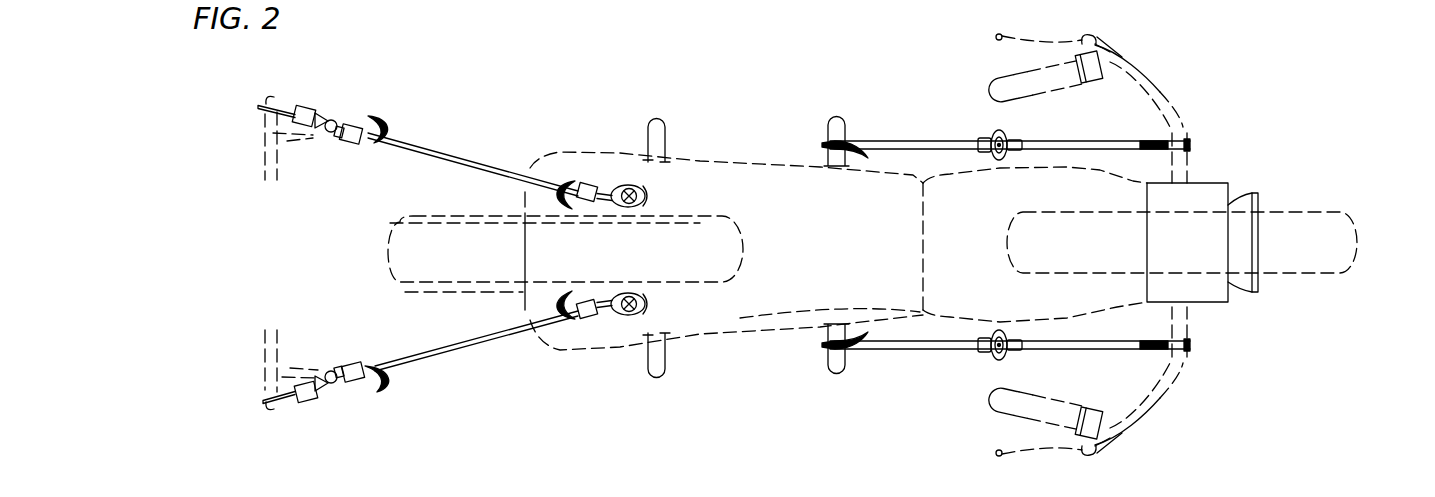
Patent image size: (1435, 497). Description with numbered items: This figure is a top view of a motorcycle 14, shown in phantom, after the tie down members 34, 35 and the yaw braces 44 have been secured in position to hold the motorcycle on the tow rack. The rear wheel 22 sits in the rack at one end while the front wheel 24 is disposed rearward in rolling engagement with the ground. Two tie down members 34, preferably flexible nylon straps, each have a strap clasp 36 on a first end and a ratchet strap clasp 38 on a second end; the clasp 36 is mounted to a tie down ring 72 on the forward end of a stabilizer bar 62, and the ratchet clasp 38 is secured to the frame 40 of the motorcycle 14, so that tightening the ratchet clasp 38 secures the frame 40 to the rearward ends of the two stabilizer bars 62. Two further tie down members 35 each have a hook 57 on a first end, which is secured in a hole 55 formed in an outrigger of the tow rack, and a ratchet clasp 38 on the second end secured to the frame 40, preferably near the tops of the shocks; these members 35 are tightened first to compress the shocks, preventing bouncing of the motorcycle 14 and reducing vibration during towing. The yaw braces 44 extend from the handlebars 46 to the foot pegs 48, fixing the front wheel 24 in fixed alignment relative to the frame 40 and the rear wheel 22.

The motorcycle 14 is at (1232, 167).
The rear wheel 22 is at (392, 251).
The front wheel 24 is at (1355, 230).
The tie down member 34 is at (497, 165).
The tie down member 35 is at (318, 114).
The strap clasp 36 is at (356, 127).
The ratchet strap clasp 38 is at (589, 183).
The frame 40 is at (783, 333).
The yaw brace 44 is at (947, 141).
The handlebars 46 is at (1157, 83).
The foot peg 48 is at (836, 113).
The hole 55 is at (263, 111).
The hook 57 is at (290, 104).
The stabilizer bar 62 is at (290, 142).
The tie down ring 72 is at (328, 139).